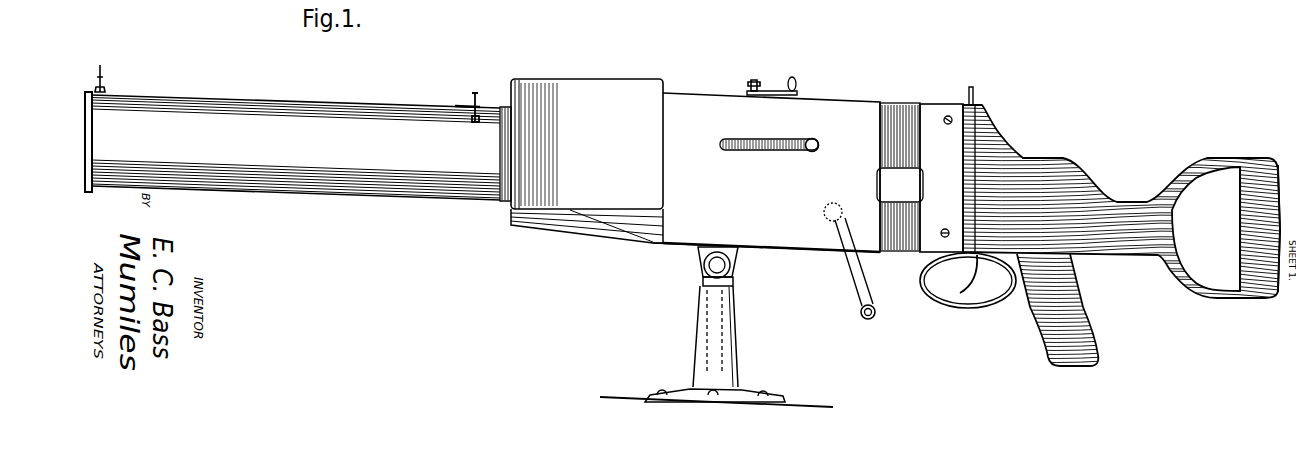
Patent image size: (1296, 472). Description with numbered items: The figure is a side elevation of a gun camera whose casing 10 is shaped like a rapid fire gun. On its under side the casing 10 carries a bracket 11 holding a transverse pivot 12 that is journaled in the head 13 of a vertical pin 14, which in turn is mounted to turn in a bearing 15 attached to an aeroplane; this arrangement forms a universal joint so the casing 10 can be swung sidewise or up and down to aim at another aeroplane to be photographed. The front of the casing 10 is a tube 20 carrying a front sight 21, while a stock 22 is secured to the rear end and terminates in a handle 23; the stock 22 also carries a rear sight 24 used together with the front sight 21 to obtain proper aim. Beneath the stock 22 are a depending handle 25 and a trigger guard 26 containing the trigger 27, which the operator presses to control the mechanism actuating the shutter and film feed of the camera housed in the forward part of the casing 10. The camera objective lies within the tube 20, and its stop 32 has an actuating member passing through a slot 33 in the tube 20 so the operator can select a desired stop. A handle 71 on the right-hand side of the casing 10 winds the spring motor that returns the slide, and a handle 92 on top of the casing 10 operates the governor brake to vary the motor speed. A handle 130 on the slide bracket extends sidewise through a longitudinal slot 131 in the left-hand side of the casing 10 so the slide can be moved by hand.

The casing 10 is at (853, 113).
The bracket 11 is at (740, 250).
The transverse pivot 12 is at (704, 264).
The head 13 is at (729, 277).
The vertical pin 14 is at (720, 335).
The bearing 15 is at (700, 333).
The tube 20 is at (348, 108).
The front sight 21 is at (103, 77).
The stock 22 is at (1016, 161).
The handle 23 is at (1230, 158).
The rear sight 24 is at (972, 87).
The depending handle 25 is at (1083, 311).
The trigger guard 26 is at (967, 308).
The trigger 27 is at (968, 278).
The stop 32 is at (477, 93).
The slot 33 is at (462, 106).
The handle 71 is at (857, 285).
The handle 92 is at (772, 91).
The handle 130 is at (812, 152).
The slot 131 is at (754, 151).